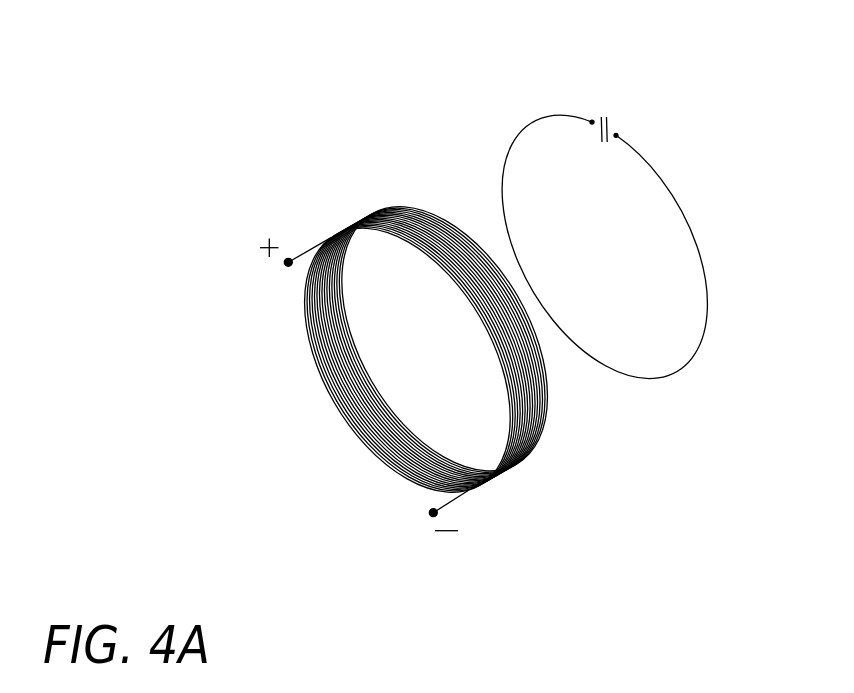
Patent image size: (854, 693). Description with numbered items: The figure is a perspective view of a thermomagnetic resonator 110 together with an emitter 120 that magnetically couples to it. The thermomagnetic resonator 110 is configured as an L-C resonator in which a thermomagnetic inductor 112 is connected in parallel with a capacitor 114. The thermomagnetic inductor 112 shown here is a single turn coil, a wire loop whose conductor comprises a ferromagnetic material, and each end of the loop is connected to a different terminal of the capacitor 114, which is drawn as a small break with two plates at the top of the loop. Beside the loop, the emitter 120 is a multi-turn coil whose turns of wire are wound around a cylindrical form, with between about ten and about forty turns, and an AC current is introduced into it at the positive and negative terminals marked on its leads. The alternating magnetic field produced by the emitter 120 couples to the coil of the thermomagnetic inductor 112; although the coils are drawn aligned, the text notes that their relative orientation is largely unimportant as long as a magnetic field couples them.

The thermomagnetic resonator 110 is at (554, 273).
The thermomagnetic inductor 112 is at (636, 389).
The capacitor 114 is at (622, 106).
The emitter 120 is at (322, 170).